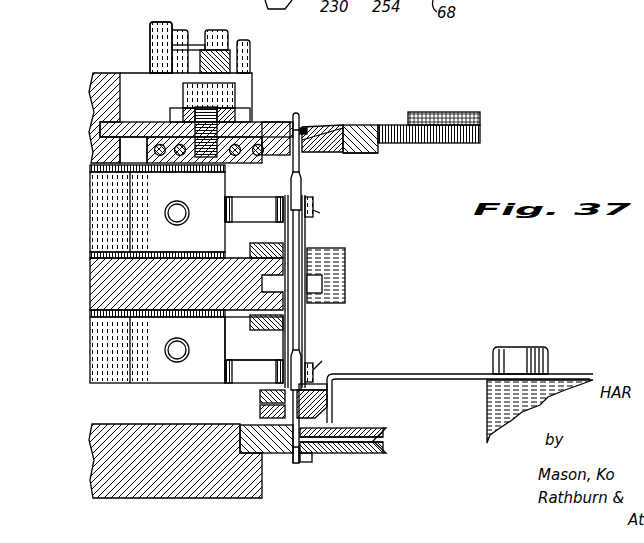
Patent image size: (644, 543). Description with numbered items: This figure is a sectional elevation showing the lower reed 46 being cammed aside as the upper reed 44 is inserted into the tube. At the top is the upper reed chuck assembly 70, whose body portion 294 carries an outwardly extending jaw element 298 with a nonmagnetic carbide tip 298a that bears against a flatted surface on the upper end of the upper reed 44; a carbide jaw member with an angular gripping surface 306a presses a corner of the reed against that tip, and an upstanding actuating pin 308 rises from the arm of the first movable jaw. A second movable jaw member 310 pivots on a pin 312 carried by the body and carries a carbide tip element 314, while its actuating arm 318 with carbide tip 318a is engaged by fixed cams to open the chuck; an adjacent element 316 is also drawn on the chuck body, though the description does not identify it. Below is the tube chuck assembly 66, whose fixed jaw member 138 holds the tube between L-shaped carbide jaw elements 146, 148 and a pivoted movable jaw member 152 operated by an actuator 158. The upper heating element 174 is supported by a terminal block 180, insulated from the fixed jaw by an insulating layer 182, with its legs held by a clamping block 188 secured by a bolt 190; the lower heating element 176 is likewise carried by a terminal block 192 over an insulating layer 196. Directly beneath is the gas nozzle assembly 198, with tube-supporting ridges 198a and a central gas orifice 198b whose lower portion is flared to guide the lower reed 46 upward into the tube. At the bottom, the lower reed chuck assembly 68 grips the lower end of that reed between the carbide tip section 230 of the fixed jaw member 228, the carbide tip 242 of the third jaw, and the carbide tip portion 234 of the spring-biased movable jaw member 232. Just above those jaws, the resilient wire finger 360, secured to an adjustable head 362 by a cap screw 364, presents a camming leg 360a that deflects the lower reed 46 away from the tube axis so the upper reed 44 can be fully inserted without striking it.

The body portion 294 is at (97, 85).
The actuating pin 308 is at (160, 32).
The pin 312 is at (208, 33).
The threaded bolt 316 is at (228, 47).
The jaw element 298 is at (281, 124).
The carbide tip 298a is at (292, 118).
The gripping surface 306a is at (306, 126).
The upper reed chuck assembly 70 is at (344, 91).
The carbide tip element 314 is at (329, 125).
The second movable jaw member 310 is at (366, 154).
The actuating arm 318 is at (480, 137).
The carbide tip 318a is at (478, 116).
The terminal block 180 is at (97, 216).
The clamping block 188 is at (137, 188).
The bolt 190 is at (162, 344).
The insulating layer 182 is at (100, 253).
The fixed jaw member 138 is at (100, 282).
The insulating layer 196 is at (100, 314).
The terminal block 192 is at (97, 338).
The upper heating element 174 is at (272, 198).
The L-shaped jaw element 146 is at (262, 245).
The L-shaped jaw element 148 is at (253, 322).
The lower heating element 176 is at (232, 380).
The tube-supporting ridge 198a is at (258, 406).
The upper reed 44 is at (305, 190).
The lower reed 46 is at (298, 340).
The actuator 158 is at (347, 254).
The movable jaw member 152 is at (322, 284).
The tube chuck assembly 66 is at (372, 278).
The gas nozzle assembly 198 is at (317, 402).
The gas orifice 198b is at (306, 386).
The resilient wire finger 360 is at (413, 373).
The cap screw 364 is at (521, 347).
The adjustable head 362 is at (563, 380).
The movable jaw member 232 is at (387, 438).
The carbide tip portion 234 is at (373, 446).
The camming leg 360a is at (313, 457).
The lower reed chuck assembly 68 is at (370, 472).
The tip section 230 is at (273, 458).
The fixed jaw member 228 is at (100, 466).
The carbide tip 242 is at (303, 463).